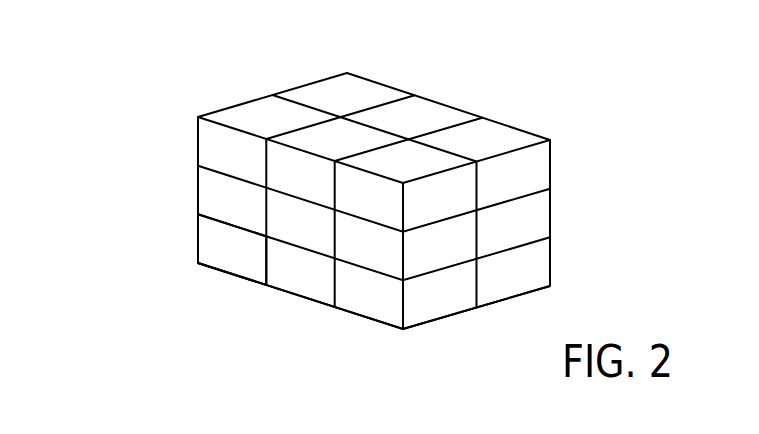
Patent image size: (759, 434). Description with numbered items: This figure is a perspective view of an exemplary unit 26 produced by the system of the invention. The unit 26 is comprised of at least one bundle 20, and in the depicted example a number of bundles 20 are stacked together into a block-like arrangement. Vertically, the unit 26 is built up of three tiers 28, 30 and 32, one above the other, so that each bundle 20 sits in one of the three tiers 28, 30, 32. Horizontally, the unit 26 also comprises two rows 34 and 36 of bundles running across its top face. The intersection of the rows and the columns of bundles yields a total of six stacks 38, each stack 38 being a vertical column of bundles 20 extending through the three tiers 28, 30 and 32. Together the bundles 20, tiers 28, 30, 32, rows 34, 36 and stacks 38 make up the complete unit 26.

The bundle 20 is at (224, 253).
The unit 26 is at (537, 83).
The tier 28 is at (558, 258).
The tier 30 is at (558, 208).
The tier 32 is at (558, 160).
The row 34 is at (237, 100).
The row 36 is at (310, 75).
The stack 38 is at (495, 137).